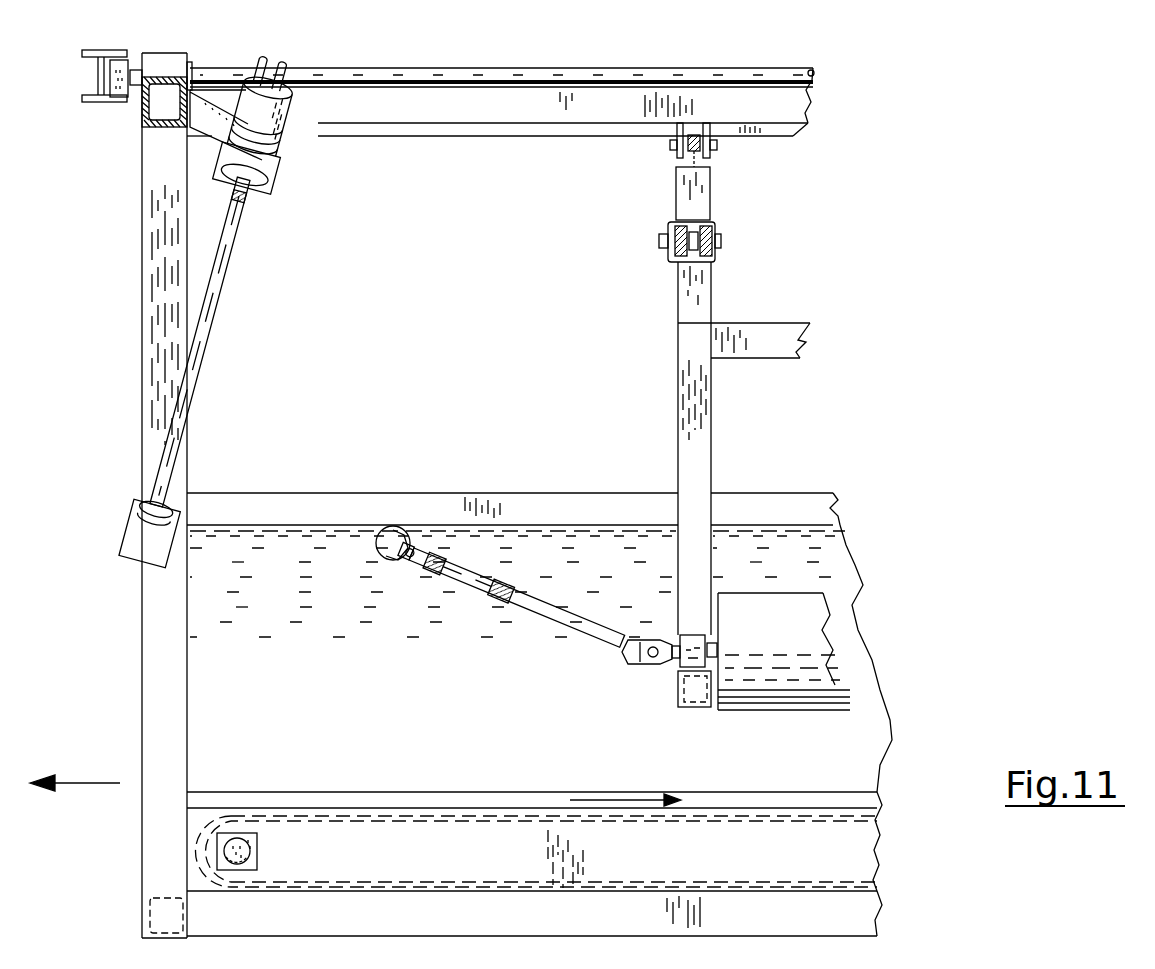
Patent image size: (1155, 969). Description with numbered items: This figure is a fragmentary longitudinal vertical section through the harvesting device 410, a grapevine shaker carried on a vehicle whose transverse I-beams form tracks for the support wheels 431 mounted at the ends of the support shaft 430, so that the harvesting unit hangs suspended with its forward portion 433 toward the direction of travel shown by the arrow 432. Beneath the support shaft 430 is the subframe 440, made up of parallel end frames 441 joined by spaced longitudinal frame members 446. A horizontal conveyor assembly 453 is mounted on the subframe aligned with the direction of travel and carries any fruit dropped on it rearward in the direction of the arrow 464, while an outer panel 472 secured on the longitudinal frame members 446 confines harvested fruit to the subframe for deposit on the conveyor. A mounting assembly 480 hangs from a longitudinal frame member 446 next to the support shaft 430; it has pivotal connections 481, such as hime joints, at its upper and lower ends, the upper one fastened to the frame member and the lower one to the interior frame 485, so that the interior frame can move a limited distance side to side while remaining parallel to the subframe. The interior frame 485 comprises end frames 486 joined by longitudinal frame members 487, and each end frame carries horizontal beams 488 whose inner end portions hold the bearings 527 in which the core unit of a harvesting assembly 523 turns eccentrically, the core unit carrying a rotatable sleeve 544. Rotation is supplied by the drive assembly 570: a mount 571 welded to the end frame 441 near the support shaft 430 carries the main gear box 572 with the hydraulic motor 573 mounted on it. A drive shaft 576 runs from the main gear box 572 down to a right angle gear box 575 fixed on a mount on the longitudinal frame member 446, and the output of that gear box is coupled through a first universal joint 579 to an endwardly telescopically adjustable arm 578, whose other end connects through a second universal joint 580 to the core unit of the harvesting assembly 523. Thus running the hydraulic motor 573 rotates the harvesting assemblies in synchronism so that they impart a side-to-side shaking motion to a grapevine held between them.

The device 410 is at (803, 178).
The support shaft 430 is at (467, 72).
The support wheels 431 is at (117, 82).
The direction of travel arrow 432 is at (86, 787).
The forward portion 433 is at (142, 656).
The subframe 440 is at (158, 495).
The end frames 441 is at (188, 322).
The longitudinal frame members 446 is at (497, 123).
The horizontal conveyor assemblies 453 is at (304, 818).
The rearward direction arrow 464 is at (641, 770).
The outer panels 472 is at (358, 681).
The mounting assemblies 480 is at (697, 379).
The pivotal connections 481 is at (672, 146).
The interior frame 485 is at (754, 316).
The end frames 486 is at (677, 298).
The longitudinal frame members 487 is at (773, 359).
The horizontal beams 488 is at (683, 690).
The harvesting assemblies 523 is at (760, 722).
The bearings 527 is at (683, 650).
The cylindrical member or sleeve 544 is at (795, 645).
The synchronizing or hydraulic drive assembly 570 is at (396, 358).
The mount 571 is at (235, 128).
The main gear box 572 is at (263, 172).
The hydraulic motor 573 is at (302, 116).
The right angle gear box 575 is at (365, 560).
The drive shafts 576 is at (298, 206).
The telescopically adjustable arms 578 is at (462, 582).
The first universal joints 579 is at (400, 565).
The second universal joints 580 is at (652, 640).